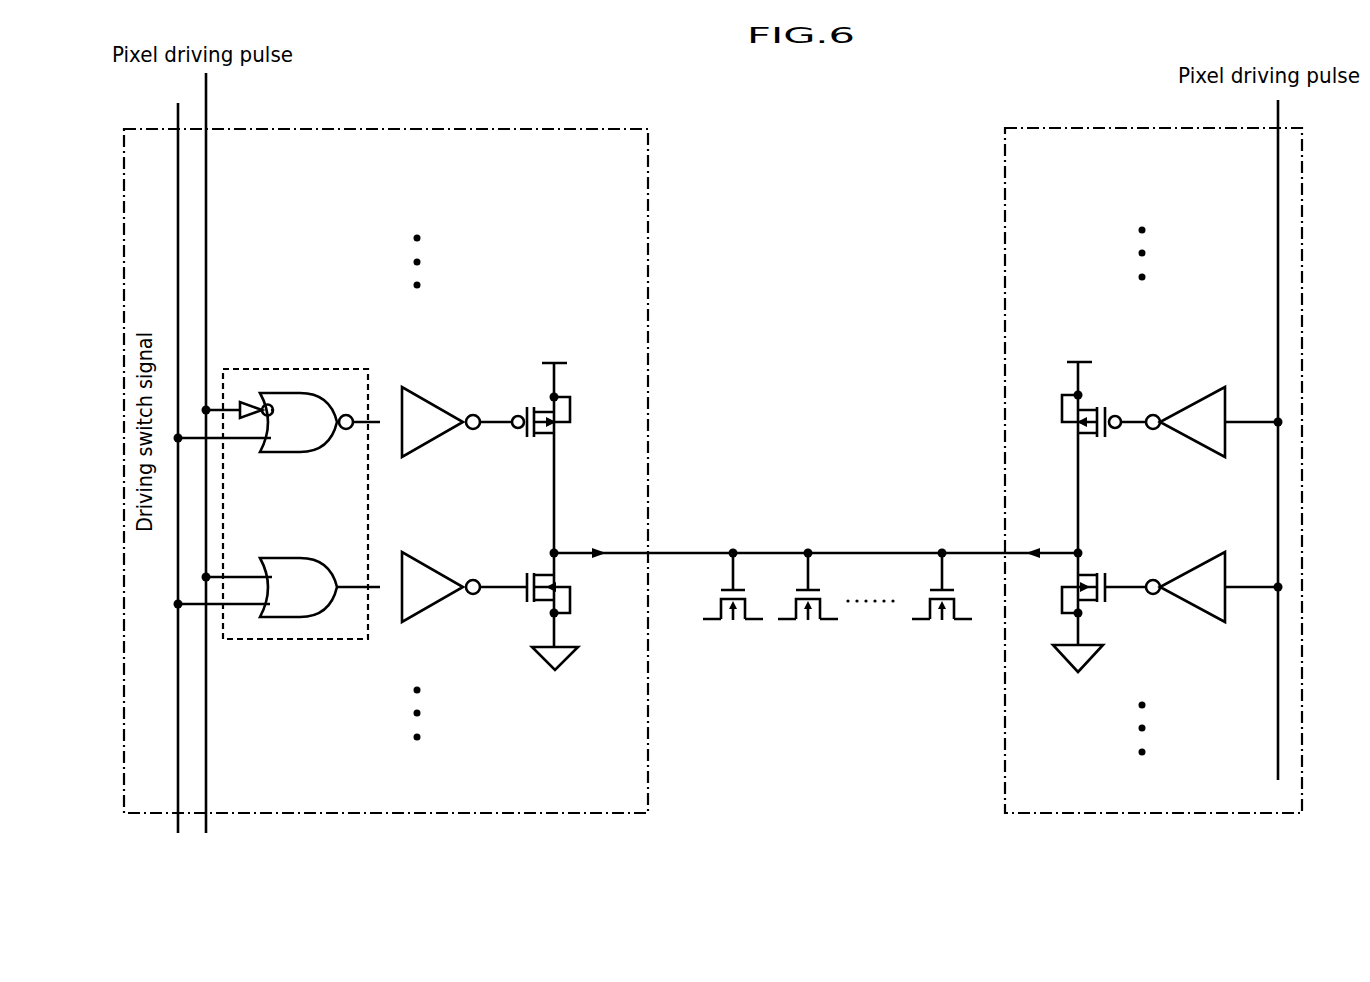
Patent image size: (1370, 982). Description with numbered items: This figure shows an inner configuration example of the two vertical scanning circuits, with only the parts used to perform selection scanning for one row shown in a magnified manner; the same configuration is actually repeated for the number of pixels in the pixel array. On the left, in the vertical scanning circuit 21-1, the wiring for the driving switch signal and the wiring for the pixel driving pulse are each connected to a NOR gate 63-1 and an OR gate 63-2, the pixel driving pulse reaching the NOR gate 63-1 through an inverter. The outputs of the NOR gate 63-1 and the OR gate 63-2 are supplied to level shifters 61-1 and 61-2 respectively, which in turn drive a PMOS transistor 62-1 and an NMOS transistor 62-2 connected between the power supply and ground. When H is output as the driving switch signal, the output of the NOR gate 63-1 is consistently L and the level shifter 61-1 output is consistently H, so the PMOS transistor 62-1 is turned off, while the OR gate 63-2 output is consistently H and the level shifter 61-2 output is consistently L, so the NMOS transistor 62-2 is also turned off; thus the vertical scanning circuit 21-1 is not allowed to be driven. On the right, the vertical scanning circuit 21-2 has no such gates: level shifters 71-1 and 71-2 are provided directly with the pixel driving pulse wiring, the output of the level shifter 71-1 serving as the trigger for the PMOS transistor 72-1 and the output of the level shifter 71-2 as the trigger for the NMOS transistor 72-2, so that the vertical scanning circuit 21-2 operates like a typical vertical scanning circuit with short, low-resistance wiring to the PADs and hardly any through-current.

The vertical scanning circuit 21-1 is at (568, 129).
The vertical scanning circuit 21-2 is at (1082, 128).
The level shifter 61-1 is at (428, 400).
The level shifter 61-2 is at (428, 565).
The PMOS transistor 62-1 is at (540, 408).
The NMOS transistor 62-2 is at (540, 600).
The NOR gate 63-1 is at (305, 393).
The OR gate 63-2 is at (303, 617).
The level shifter 71-1 is at (1195, 405).
The level shifter 71-2 is at (1195, 570).
The PMOS transistor 72-1 is at (1090, 408).
The NMOS transistor 72-2 is at (1090, 600).